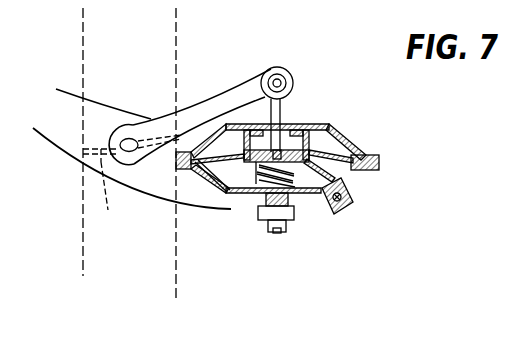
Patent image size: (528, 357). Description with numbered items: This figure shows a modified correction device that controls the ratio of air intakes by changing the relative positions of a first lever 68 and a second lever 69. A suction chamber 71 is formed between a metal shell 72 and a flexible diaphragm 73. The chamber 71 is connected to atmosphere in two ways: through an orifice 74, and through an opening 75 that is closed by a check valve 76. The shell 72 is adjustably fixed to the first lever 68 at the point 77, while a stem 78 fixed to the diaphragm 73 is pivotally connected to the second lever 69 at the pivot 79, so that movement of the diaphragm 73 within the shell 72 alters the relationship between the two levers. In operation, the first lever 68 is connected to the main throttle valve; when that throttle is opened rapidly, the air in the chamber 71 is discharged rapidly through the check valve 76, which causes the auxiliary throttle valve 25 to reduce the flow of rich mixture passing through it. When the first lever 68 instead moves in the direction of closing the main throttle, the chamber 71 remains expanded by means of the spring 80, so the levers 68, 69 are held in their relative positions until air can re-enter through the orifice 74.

The auxiliary throttle valve 25 is at (129, 153).
The first lever 68 is at (70, 141).
The second lever 69 is at (235, 92).
The suction chamber 71 is at (333, 165).
The metal shell 72 is at (228, 188).
The flexible diaphragm 73 is at (317, 152).
The orifice 74 is at (347, 186).
The opening 75 is at (342, 214).
The check valve 76 is at (333, 198).
The adjustable fixing point 77 is at (273, 202).
The stem 78 is at (285, 115).
The pivotal connection 79 is at (282, 76).
The spring 80 is at (245, 175).